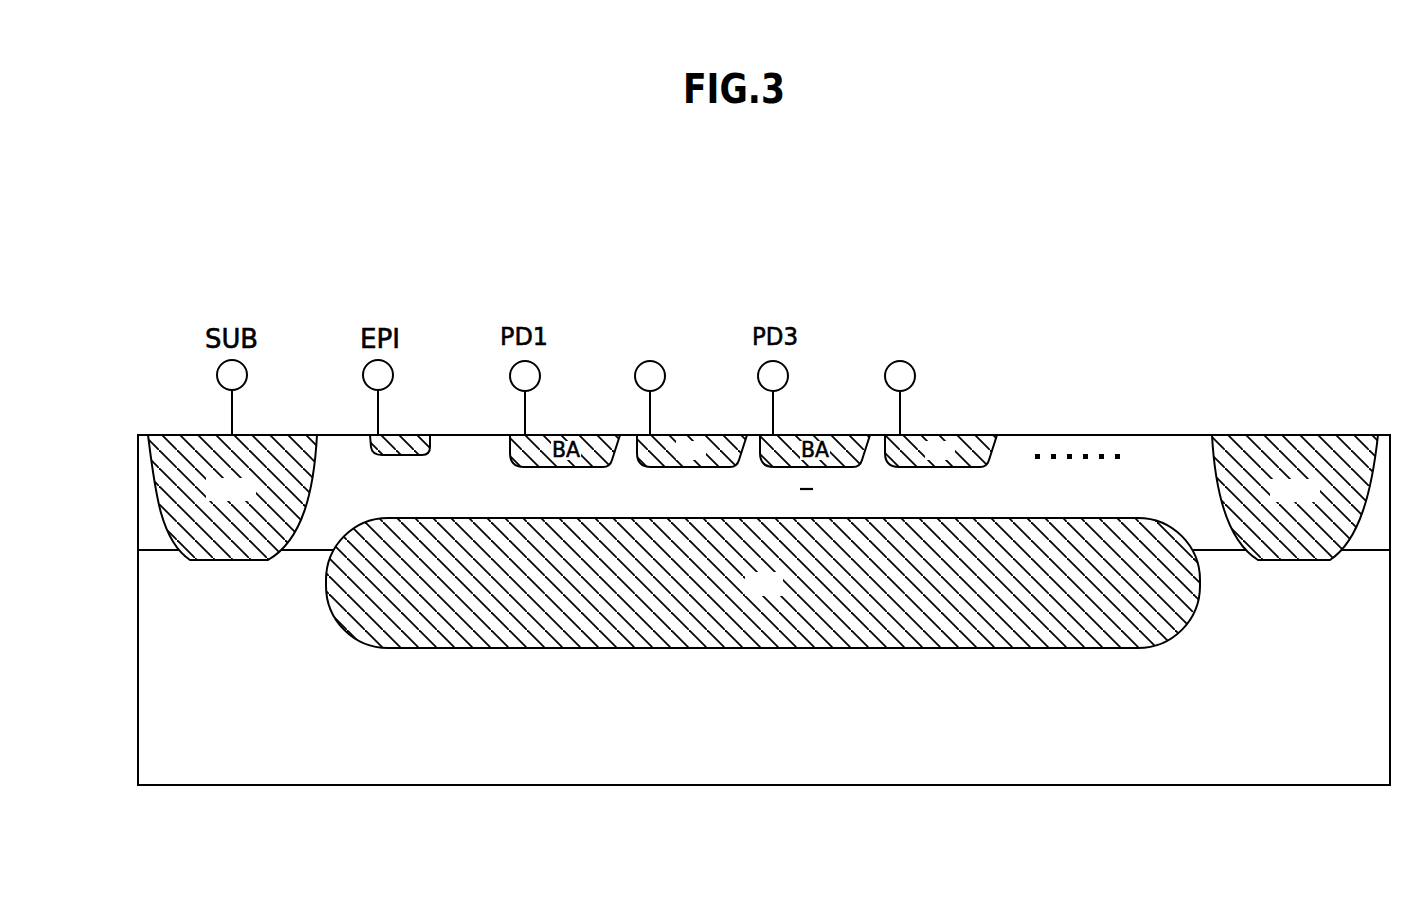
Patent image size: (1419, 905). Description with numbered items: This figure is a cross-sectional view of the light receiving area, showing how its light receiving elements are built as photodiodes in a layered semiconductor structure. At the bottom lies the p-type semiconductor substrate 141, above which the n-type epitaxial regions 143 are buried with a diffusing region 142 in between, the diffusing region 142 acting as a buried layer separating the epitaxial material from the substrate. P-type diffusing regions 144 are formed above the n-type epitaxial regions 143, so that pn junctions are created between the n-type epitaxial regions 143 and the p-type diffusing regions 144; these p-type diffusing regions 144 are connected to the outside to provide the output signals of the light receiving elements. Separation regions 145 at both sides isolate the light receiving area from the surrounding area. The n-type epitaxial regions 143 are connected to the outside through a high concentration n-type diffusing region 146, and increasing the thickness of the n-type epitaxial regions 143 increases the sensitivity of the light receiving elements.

The p-type semiconductor substrate 141 is at (962, 763).
The diffusing region 142 is at (495, 648).
The n-type epitaxial region 143 is at (1160, 447).
The p-type diffusing region 144 is at (708, 435).
The separation region 145 is at (181, 435).
The high concentration n-type diffusing region 146 is at (372, 435).